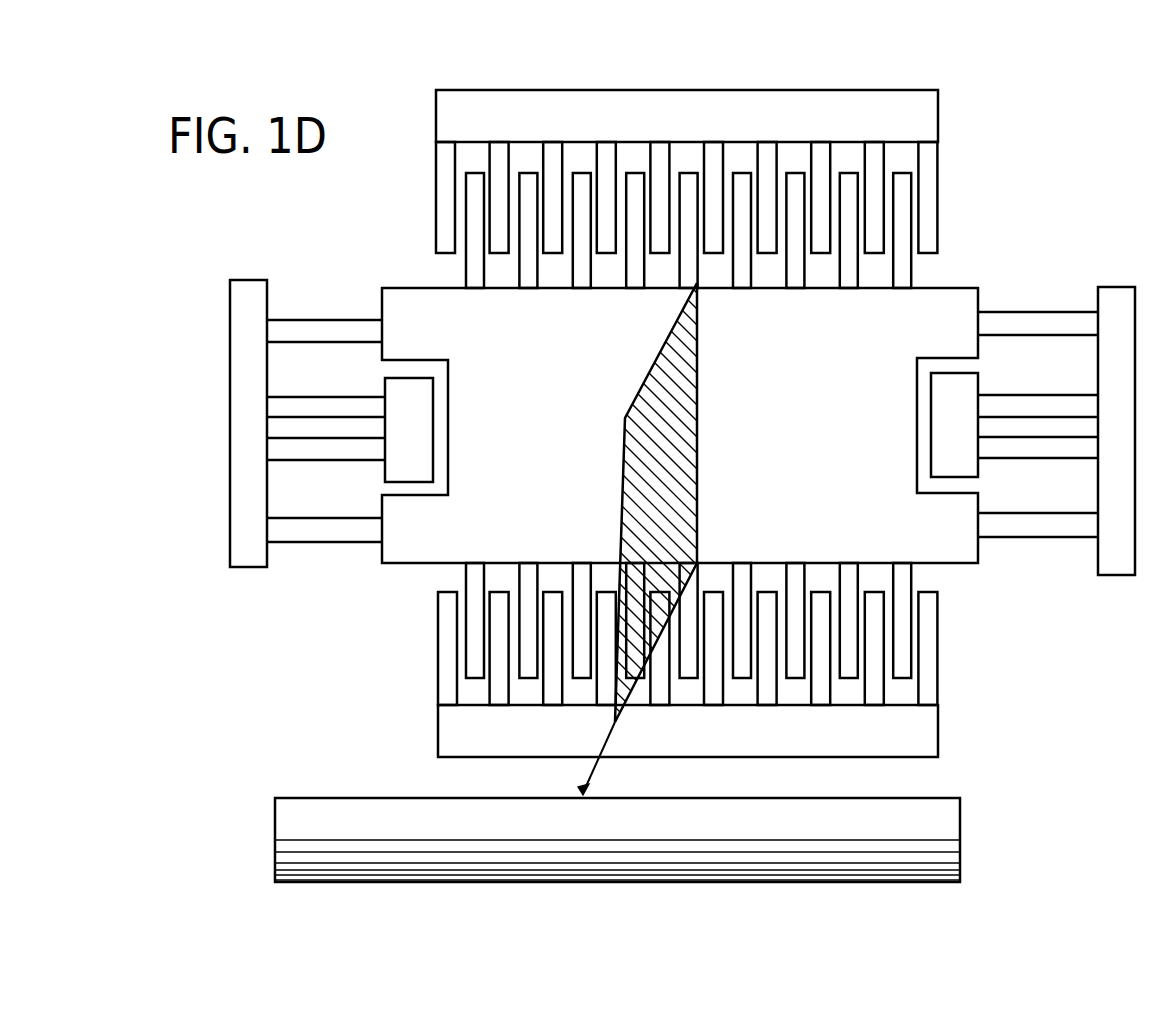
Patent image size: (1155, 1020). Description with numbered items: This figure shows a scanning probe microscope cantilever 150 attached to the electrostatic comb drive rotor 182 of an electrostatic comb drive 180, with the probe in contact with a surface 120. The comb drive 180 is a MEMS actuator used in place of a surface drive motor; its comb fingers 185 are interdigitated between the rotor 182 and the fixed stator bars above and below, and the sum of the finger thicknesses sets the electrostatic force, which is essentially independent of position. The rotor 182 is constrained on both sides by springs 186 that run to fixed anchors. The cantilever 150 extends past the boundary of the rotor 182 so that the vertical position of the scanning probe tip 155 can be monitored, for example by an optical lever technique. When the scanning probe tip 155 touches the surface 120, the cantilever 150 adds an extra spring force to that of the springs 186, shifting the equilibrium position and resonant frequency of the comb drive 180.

The electrostatic comb drive 180 is at (900, 56).
The comb fingers 185 is at (905, 276).
The electrostatic comb drive rotor 182 is at (400, 305).
The springs 186 is at (333, 535).
The scanning probe microscope cantilever 150 is at (590, 771).
The scanning probe tip 155 is at (581, 790).
The surface 120 is at (950, 820).